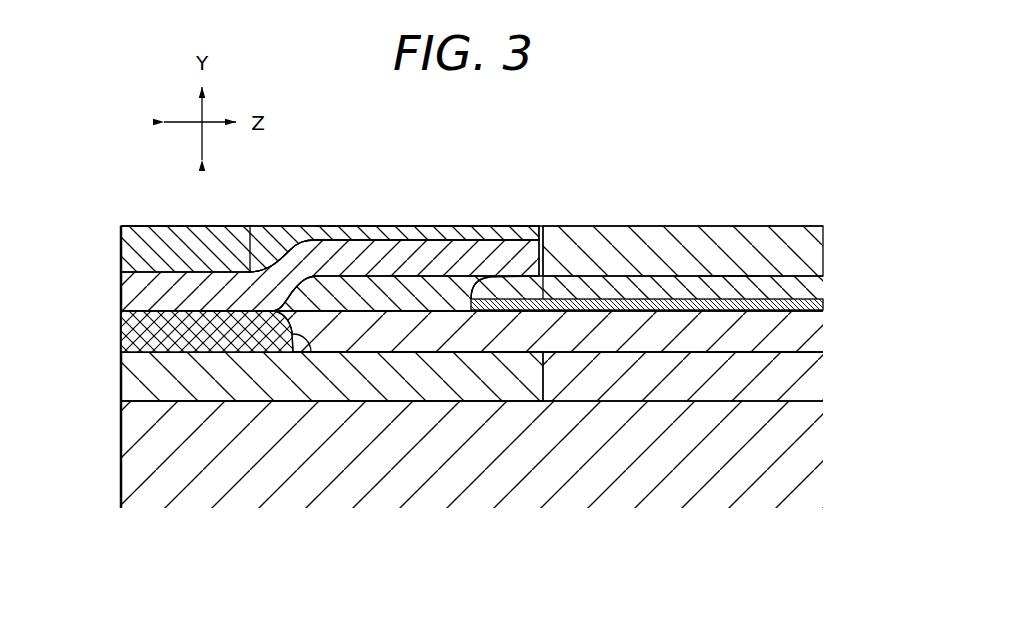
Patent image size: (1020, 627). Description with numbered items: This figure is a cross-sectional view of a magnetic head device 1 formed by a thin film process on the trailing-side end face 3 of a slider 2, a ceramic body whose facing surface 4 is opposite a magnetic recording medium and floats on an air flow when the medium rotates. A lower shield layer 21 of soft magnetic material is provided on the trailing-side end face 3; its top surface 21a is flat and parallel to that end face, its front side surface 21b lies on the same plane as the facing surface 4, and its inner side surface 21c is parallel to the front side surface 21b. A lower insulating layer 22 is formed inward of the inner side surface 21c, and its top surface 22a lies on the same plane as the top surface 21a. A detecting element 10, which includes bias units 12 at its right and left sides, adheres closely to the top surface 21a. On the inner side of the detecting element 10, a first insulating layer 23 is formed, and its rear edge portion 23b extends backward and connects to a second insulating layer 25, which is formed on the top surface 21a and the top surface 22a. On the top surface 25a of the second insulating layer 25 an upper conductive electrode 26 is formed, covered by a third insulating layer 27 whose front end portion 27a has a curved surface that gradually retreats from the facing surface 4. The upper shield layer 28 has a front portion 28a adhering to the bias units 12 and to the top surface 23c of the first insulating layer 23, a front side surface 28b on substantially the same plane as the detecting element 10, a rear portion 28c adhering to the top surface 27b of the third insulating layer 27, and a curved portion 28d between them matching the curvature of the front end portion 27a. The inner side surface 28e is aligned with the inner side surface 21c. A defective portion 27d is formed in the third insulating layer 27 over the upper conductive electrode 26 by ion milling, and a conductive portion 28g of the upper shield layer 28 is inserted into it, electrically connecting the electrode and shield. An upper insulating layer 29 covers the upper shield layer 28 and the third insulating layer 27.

The magnetic head device 1 is at (505, 178).
The slider 2 is at (800, 478).
The trailing-side end face 3 is at (475, 400).
The facing surface 4 is at (120, 468).
The detecting element 10 is at (118, 333).
The bias unit 12 is at (120, 343).
The lower shield layer 21 is at (292, 368).
The top surface 21a is at (347, 352).
The front side surface 21b is at (120, 372).
The inner side surface 21c is at (544, 394).
The lower insulating layer 22 is at (813, 375).
The top surface 22a is at (738, 352).
The first insulating layer 23 is at (243, 333).
The rear edge portion 23b is at (305, 352).
The top surface 23c is at (232, 315).
The second insulating layer 25 is at (425, 332).
The top surface 25a is at (420, 310).
The upper conductive electrode 26 is at (823, 301).
The third insulating layer 27 is at (380, 302).
The front end portion 27a is at (283, 303).
The top surface 27b is at (727, 277).
The defective portion 27d is at (520, 300).
The upper shield layer 28 is at (197, 288).
The front portion 28a is at (147, 290).
The front side surface 28b is at (120, 302).
The rear portion 28c is at (447, 257).
The curved portion 28d is at (257, 247).
The inner side surface 28e is at (543, 260).
The conductive portion 28g is at (497, 298).
The upper insulating layer 29 is at (643, 240).